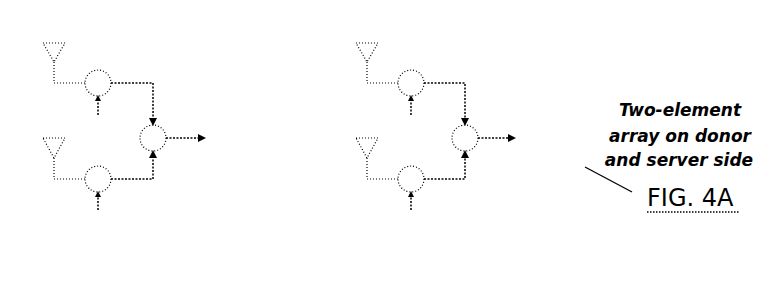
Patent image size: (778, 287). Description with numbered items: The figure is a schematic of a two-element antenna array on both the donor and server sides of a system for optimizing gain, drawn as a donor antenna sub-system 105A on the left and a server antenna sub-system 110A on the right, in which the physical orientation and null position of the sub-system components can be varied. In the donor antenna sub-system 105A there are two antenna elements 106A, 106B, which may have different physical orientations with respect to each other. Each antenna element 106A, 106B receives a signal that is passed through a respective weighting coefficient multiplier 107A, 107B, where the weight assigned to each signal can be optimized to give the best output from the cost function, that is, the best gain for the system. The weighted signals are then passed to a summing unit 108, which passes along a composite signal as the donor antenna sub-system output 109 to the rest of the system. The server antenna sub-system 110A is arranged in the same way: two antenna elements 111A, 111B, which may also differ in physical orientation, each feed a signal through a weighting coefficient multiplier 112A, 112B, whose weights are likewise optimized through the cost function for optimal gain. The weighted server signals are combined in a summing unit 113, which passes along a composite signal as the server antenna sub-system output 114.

The donor antenna sub-system 105A is at (143, 147).
The antenna element 106A is at (52, 43).
The antenna element 106B is at (53, 137).
The weighting coefficient multiplier 107A is at (106, 74).
The weighting coefficient multiplier 107B is at (119, 164).
The summing unit 108 is at (161, 129).
The donor antenna sub-system output 109 is at (210, 151).
The server antenna sub-system 110A is at (448, 147).
The antenna element 111A is at (365, 43).
The antenna element 111B is at (362, 140).
The weighting coefficient multiplier 112A is at (432, 63).
The weighting coefficient multiplier 112B is at (430, 164).
The summing unit 113 is at (473, 137).
The server antenna sub-system output 114 is at (522, 149).